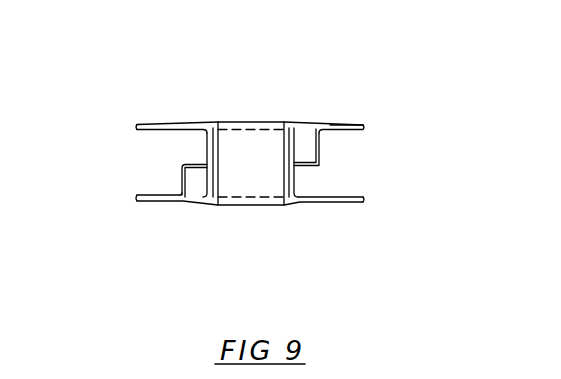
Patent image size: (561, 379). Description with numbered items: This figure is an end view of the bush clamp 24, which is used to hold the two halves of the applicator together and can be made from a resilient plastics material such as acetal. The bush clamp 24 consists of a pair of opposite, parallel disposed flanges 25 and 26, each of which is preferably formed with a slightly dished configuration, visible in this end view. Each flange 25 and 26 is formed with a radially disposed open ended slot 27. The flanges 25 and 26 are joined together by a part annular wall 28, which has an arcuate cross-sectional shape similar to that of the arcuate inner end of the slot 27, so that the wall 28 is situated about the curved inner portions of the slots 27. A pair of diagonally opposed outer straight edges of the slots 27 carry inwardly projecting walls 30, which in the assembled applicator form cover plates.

The bush clamp 24 is at (298, 118).
The flange 25 is at (353, 122).
The flange 26 is at (338, 203).
The slot 27 is at (243, 127).
The part annular wall 28 is at (262, 183).
The inwardly projecting wall 30 is at (190, 188).